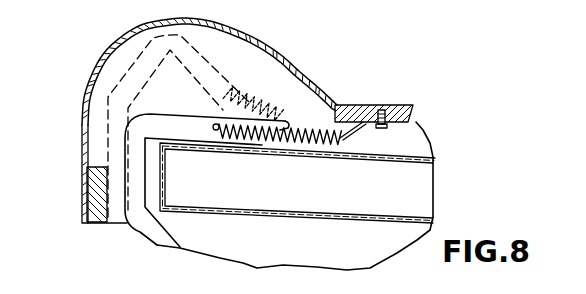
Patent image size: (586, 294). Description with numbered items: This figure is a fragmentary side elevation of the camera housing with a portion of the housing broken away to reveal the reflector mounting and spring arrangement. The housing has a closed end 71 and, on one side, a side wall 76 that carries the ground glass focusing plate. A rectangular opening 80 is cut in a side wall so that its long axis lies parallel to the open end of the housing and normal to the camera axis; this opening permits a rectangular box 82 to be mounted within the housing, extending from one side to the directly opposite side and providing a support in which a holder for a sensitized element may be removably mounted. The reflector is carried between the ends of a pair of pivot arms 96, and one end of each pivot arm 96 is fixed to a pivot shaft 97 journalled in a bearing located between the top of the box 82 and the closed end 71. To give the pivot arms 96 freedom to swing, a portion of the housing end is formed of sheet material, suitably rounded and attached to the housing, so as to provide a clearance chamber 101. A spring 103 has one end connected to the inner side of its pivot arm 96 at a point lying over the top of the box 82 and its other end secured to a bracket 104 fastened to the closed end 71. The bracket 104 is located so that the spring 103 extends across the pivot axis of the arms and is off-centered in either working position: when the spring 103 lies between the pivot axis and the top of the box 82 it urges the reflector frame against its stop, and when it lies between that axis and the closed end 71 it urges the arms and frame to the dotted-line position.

The closed end 71 is at (296, 66).
The clearance chamber 101 is at (244, 56).
The side wall 76 is at (87, 198).
The rectangular opening 80 is at (290, 193).
The rectangular box 82 is at (217, 211).
The pivot arm 96 is at (160, 117).
The pivot shaft 97 is at (278, 130).
The spring 103 is at (316, 135).
The bracket 104 is at (357, 128).